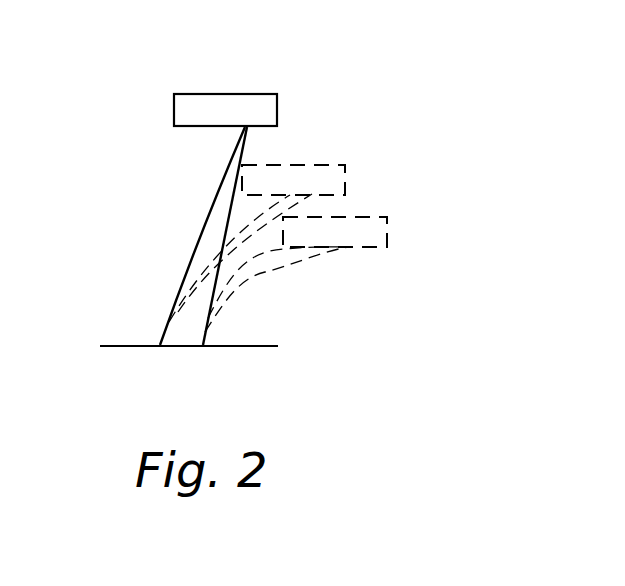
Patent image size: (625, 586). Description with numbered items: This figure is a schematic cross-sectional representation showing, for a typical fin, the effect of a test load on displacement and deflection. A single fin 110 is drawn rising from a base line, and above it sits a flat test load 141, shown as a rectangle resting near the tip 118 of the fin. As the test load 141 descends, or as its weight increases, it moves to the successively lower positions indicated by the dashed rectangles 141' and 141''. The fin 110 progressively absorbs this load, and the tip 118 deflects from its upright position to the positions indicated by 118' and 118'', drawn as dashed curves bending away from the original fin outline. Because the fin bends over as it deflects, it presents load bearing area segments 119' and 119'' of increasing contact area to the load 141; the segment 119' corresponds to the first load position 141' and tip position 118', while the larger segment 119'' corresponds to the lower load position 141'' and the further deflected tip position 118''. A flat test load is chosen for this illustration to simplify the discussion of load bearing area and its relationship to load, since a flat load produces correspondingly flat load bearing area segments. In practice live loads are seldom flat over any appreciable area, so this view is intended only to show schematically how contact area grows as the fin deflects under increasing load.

The fin 110 is at (183, 233).
The tip 118 is at (194, 236).
The test load 141 is at (258, 64).
The load bearing area segment 119' is at (260, 198).
The tip position 118' is at (278, 208).
The test load position 141' is at (347, 158).
The load bearing area segment 119'' is at (351, 239).
The test load position 141'' is at (402, 224).
The tip position 118'' is at (328, 289).